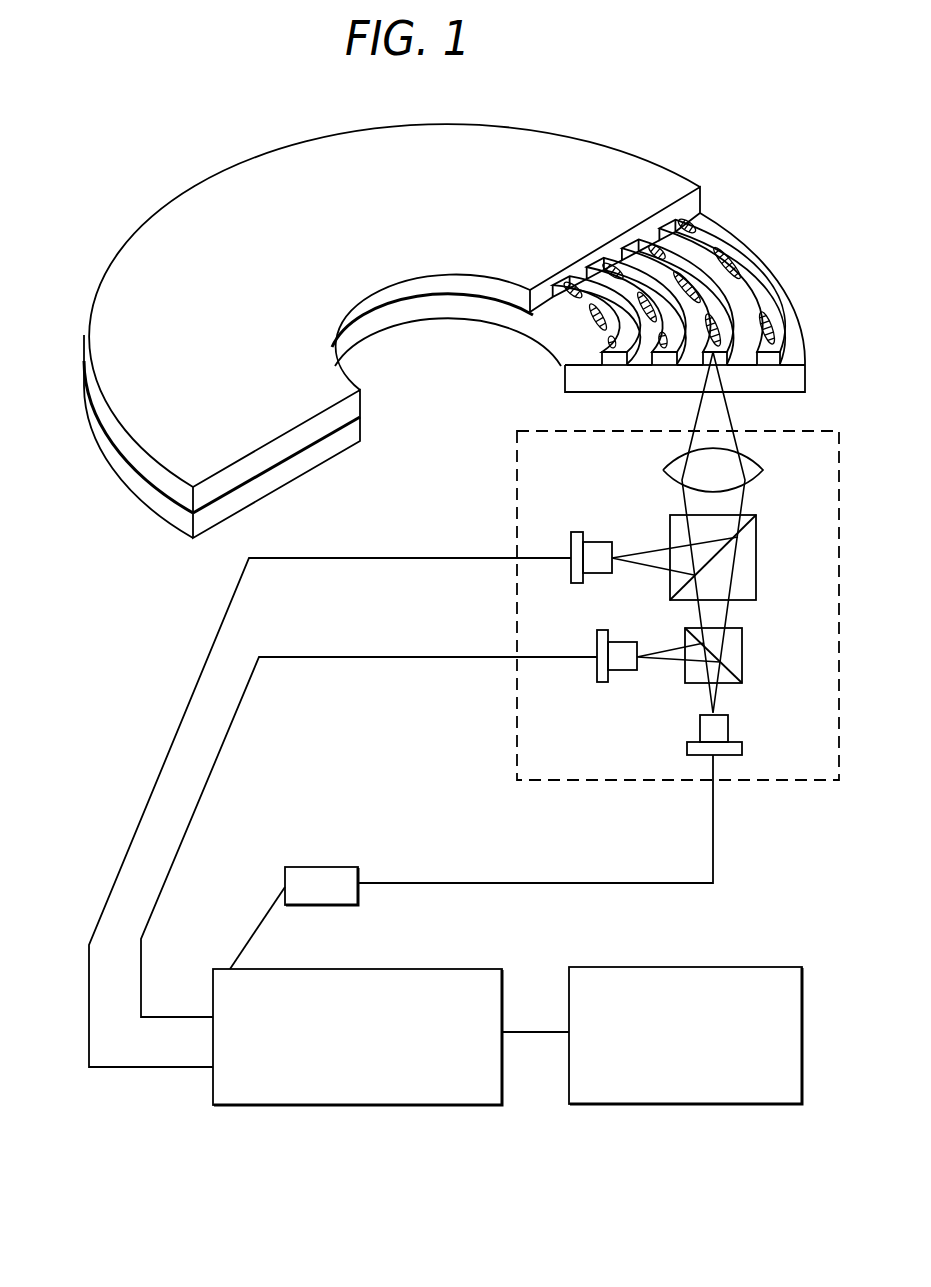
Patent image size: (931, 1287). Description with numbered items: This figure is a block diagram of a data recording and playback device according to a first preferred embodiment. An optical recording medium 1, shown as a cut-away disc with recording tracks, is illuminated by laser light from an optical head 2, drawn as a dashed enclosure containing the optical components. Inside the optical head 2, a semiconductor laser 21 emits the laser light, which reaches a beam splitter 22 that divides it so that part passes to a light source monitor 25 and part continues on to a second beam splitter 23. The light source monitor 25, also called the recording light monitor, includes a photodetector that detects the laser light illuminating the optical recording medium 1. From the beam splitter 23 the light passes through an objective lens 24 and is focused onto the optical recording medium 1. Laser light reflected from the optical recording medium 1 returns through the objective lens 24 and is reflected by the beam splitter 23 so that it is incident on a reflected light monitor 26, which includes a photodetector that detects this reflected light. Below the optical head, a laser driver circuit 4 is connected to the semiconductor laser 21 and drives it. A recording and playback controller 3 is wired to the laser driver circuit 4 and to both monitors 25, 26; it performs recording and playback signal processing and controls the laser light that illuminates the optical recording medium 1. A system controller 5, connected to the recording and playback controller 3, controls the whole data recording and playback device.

The optical recording medium 1 is at (592, 160).
The optical head 2 is at (658, 566).
The recording and playback controller 3 is at (400, 967).
The laser driver circuit 4 is at (330, 865).
The system controller 5 is at (707, 965).
The semiconductor laser 21 is at (742, 742).
The beam splitter 22 is at (740, 653).
The beam splitter 23 is at (757, 522).
The objective lens 24 is at (753, 455).
The light source monitor 25 is at (597, 643).
The reflected light monitor 26 is at (571, 553).